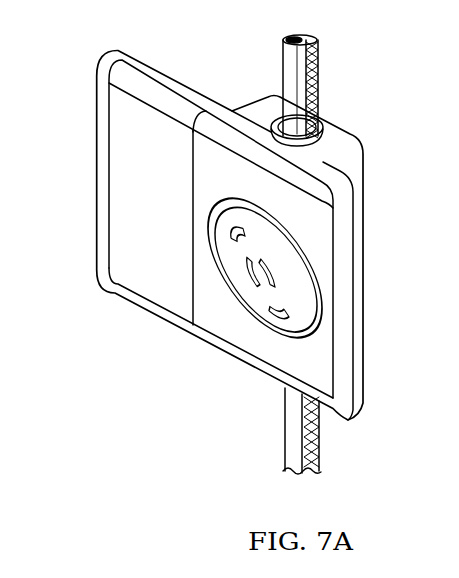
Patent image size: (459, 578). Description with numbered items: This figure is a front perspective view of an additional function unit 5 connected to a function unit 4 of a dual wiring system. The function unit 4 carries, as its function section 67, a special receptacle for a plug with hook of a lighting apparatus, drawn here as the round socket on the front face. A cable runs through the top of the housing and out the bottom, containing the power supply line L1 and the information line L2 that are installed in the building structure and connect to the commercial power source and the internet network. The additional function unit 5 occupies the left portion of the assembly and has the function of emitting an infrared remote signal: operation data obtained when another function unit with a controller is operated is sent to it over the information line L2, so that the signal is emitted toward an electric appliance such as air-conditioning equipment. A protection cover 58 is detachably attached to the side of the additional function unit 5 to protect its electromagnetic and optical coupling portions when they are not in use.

The function unit 4 is at (218, 315).
The additional function unit 5 is at (132, 227).
The protection cover 58 is at (102, 133).
The function section 67 is at (257, 305).
The power supply line L1 is at (288, 82).
The information line L2 is at (313, 82).